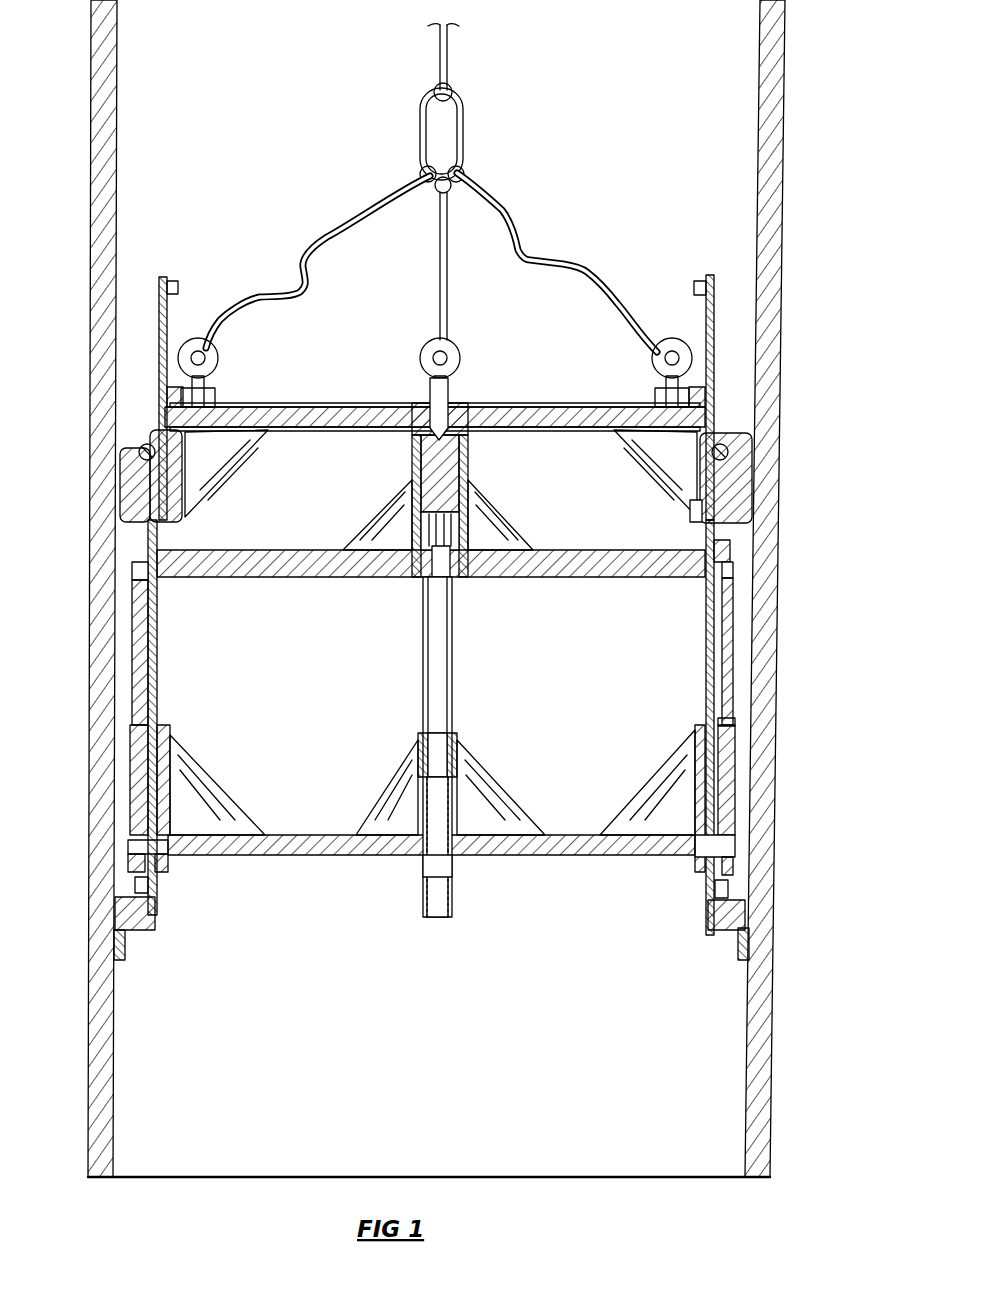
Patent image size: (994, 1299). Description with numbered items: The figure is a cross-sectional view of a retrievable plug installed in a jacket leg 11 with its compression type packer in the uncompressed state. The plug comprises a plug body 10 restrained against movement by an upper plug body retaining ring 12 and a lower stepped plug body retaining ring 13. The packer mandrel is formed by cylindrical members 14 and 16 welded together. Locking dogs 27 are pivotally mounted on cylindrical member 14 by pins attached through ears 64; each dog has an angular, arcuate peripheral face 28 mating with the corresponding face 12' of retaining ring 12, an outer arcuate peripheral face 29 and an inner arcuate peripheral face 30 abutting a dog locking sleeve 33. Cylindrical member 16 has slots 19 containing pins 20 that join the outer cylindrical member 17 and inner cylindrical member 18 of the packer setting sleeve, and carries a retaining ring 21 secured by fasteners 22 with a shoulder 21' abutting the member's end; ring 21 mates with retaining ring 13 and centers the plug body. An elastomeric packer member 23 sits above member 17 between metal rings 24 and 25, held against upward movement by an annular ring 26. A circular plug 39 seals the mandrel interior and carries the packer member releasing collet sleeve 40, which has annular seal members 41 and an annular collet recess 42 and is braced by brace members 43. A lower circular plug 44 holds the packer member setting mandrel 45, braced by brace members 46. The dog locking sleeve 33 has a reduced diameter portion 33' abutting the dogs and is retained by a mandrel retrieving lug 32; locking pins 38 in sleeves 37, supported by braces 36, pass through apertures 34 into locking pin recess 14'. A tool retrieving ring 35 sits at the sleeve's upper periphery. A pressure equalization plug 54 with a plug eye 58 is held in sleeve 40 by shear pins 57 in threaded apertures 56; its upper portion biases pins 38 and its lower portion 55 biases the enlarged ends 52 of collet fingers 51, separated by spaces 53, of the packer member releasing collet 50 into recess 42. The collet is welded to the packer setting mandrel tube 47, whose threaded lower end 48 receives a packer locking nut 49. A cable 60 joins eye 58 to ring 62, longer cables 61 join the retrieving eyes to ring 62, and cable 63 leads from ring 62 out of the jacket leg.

The plug body 10 is at (517, 198).
The jacket leg 11 is at (786, 44).
The upper plug body retaining ring 12 is at (772, 478).
The angular, arcuate peripheral face 12' is at (799, 503).
The lower stepped plug body retaining ring 13 is at (750, 960).
The cylindrical member 14 is at (774, 373).
The locking pin recess 14' is at (443, 398).
The cylindrical member 16 is at (712, 620).
The outer cylindrical member 17 is at (730, 760).
The inner cylindrical member 18 is at (172, 735).
The slots 19 is at (714, 805).
The pins 20 is at (740, 853).
The retaining ring 21 is at (776, 916).
The shoulder 21' is at (173, 923).
The fasteners 22 is at (728, 893).
The packer member 23 is at (728, 650).
The metal ring 24 is at (735, 720).
The metal ring 25 is at (722, 580).
The annular ring 26 is at (730, 560).
The locking dogs 27 is at (742, 520).
The angular, arcuate peripheral face 28 is at (120, 467).
The outer arcuate peripheral face 29 is at (120, 510).
The inner arcuate peripheral face 30 is at (690, 507).
The mandrel retrieving lug 32 is at (700, 285).
The dog locking sleeve 33 is at (496, 392).
The reduced diameter portion 33' is at (691, 450).
The apertures 34 is at (712, 416).
The tool retrieving ring 35 is at (655, 398).
The brace 36 is at (240, 452).
The sleeves 37 is at (320, 405).
The locking pins 38 is at (263, 413).
The circular plug 39 is at (592, 580).
The packer member releasing collet sleeve 40 is at (470, 446).
The annular seal members 41 is at (462, 472).
The annular collet recess 42 is at (470, 502).
The brace members 43 is at (512, 530).
The circular plug 44 is at (578, 855).
The packer member setting mandrel 45 is at (460, 745).
The brace members 46 is at (388, 780).
The packer setting mandrel tube 47 is at (452, 652).
The lower end 48 is at (450, 900).
The packer locking nut 49 is at (420, 876).
The packer member releasing collet 50 is at (420, 576).
The collet fingers 51 is at (384, 545).
The enlarged ends 52 is at (408, 490).
The spaces 53 is at (345, 548).
The pressure equalization plug 54 is at (460, 402).
The lower portion 55 is at (415, 525).
The threaded apertures 56 is at (418, 436).
The shear pins 57 is at (413, 458).
The plug eye 58 is at (450, 348).
The cable 60 is at (448, 238).
The cables 61 is at (540, 260).
The ring 62 is at (464, 136).
The cable 63 is at (448, 45).
The ears 64 is at (130, 445).